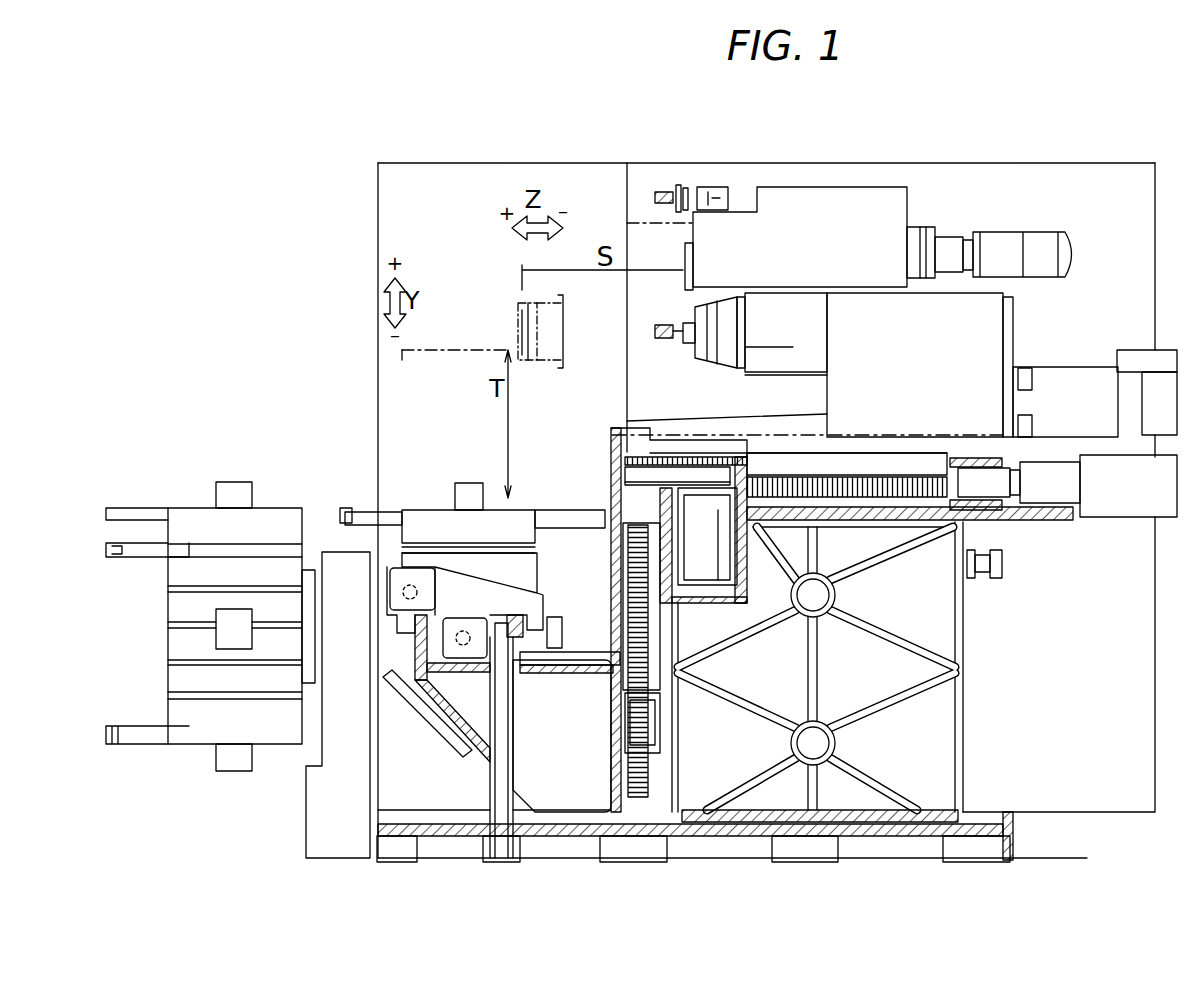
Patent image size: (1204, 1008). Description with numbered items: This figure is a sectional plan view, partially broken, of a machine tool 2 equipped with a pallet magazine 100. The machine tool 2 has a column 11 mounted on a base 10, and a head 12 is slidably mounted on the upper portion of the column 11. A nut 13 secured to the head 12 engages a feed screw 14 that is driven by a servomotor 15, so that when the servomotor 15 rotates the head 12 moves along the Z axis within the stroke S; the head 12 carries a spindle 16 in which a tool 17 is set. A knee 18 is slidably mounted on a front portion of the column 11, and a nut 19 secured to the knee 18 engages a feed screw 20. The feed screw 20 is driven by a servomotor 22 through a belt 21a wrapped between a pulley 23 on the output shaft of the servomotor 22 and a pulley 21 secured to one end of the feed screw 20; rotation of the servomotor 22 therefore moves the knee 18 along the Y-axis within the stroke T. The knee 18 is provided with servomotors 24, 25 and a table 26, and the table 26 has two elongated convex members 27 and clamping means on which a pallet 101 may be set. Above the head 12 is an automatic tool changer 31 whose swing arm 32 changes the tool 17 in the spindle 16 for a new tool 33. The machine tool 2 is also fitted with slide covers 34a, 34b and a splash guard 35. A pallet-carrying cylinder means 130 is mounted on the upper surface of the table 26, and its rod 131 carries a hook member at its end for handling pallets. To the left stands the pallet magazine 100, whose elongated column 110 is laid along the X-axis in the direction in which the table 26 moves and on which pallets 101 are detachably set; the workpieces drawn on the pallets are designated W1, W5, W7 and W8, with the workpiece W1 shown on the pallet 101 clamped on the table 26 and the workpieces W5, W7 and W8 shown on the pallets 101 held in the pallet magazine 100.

The machine tool 2 is at (1162, 185).
The base 10 is at (1082, 848).
The column 11 is at (1133, 590).
The head 12 is at (945, 290).
The nut 13 is at (990, 518).
The feed screw 14 is at (882, 497).
The servomotor 15 is at (1153, 505).
The spindle 16 is at (722, 330).
The tool 17 is at (660, 322).
The knee 18 is at (438, 718).
The nut 19 is at (652, 722).
The feed screw 20 is at (650, 770).
The pulley 21 is at (620, 445).
The belt 21a is at (672, 455).
The servomotor 22 is at (698, 575).
The pulley 23 is at (742, 455).
The servomotor 24 is at (475, 660).
The servomotor 25 is at (437, 594).
The table 26 is at (512, 572).
The elongated convex members 27 is at (522, 556).
The automatic tool changer 31 is at (866, 188).
The swing arm 32 is at (690, 200).
The new tool 33 is at (664, 190).
The slide cover 34a is at (700, 420).
The slide cover 34b is at (608, 458).
The splash guard 35 is at (430, 162).
The pallet magazine 100 is at (233, 456).
The pallet 101 is at (178, 530).
The column 110 is at (335, 735).
The pallet-carrying cylinder means 130 is at (580, 516).
The rod 131 is at (352, 506).
The workpiece W1 is at (467, 492).
The workpiece W5 is at (227, 493).
The workpiece W7 is at (218, 765).
The workpiece W8 is at (220, 640).